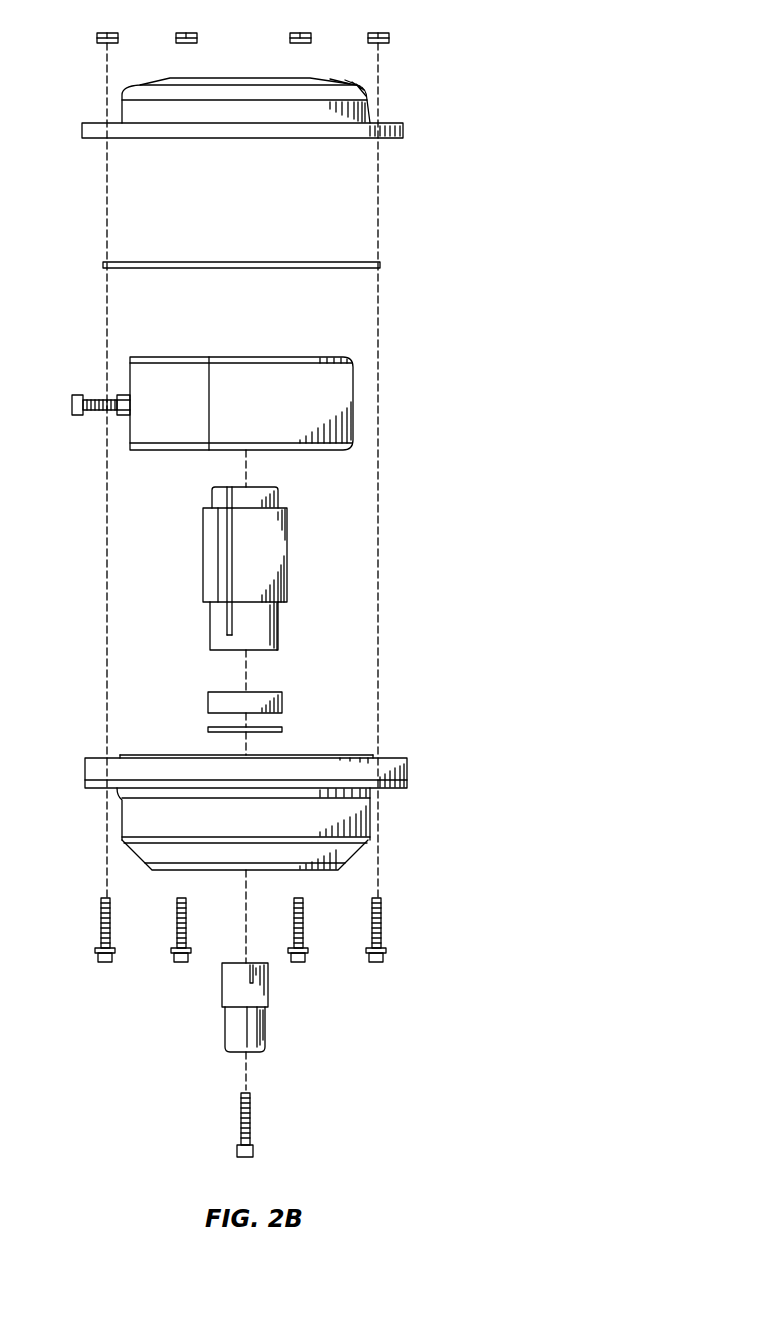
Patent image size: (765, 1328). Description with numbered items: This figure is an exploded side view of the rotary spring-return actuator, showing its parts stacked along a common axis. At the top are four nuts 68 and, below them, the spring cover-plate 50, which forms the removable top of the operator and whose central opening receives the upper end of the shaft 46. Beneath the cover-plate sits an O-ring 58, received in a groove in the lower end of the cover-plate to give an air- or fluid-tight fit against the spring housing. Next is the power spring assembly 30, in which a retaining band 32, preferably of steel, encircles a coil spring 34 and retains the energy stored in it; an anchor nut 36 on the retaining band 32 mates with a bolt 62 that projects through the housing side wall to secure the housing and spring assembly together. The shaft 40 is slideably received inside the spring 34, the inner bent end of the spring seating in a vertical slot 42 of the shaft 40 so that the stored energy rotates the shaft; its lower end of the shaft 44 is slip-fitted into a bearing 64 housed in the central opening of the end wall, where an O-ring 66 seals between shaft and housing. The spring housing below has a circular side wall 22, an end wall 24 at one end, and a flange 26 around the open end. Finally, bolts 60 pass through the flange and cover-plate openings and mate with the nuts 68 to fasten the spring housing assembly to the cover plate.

The circular side wall 22 is at (120, 815).
The end wall 24 is at (153, 852).
The flange 26 is at (85, 770).
The power spring assembly 30 is at (252, 437).
The retaining band 32 is at (128, 428).
The coil spring 34 is at (168, 448).
The anchor nut 36 is at (127, 393).
The shaft 40 is at (287, 591).
The vertical slot 42 is at (227, 612).
The lower end of the shaft 44 is at (210, 640).
The upper end of the shaft 46 is at (283, 497).
The spring cover-plate 50 is at (408, 131).
The O-ring 58 is at (380, 262).
The bolts 60 is at (105, 962).
The bolt 62 is at (70, 402).
The bearing 64 is at (282, 703).
The O-ring 66 is at (282, 730).
The nuts 68 is at (107, 31).